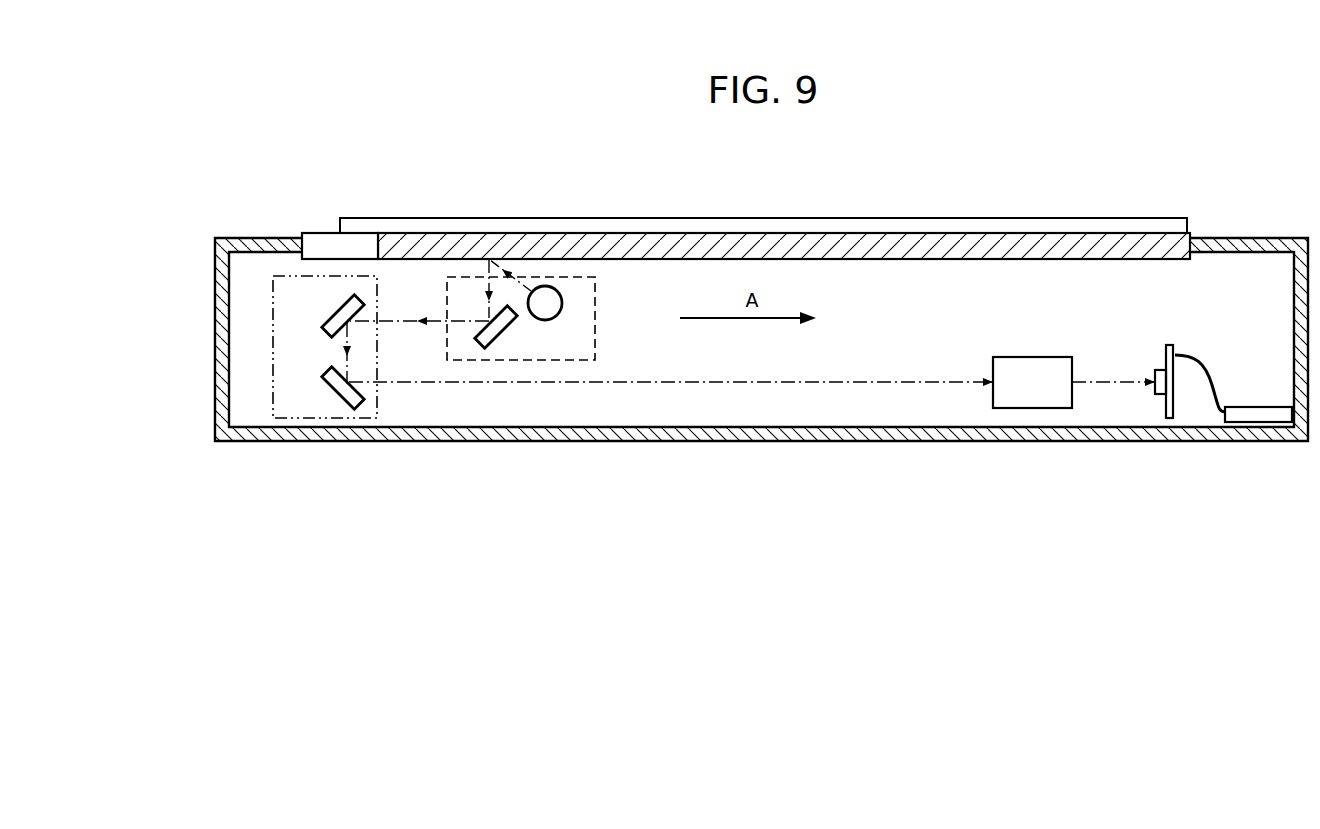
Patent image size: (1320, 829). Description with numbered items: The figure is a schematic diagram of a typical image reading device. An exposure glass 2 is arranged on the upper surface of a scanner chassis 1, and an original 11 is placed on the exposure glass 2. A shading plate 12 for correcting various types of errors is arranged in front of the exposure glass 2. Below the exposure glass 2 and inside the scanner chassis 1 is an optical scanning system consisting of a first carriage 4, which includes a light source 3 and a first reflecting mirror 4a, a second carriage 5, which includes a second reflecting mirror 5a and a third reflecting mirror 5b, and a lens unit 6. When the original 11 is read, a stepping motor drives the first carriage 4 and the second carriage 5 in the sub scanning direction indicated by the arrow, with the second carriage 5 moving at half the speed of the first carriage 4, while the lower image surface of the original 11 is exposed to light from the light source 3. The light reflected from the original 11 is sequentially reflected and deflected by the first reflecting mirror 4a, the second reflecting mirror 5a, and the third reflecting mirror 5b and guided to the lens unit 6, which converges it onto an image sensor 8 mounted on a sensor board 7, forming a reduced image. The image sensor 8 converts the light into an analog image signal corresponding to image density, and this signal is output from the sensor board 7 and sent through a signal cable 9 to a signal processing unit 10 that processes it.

The scanner chassis 1 is at (1056, 441).
The exposure glass 2 is at (648, 233).
The light source 3 is at (562, 301).
The first carriage 4 is at (544, 318).
The first reflecting mirror 4a is at (504, 327).
The second carriage 5 is at (349, 347).
The second reflecting mirror 5a is at (335, 307).
The third reflecting mirror 5b is at (336, 392).
The lens unit 6 is at (1034, 357).
The sensor board 7 is at (1172, 410).
The image sensor 8 is at (1154, 372).
The signal cable 9 is at (1178, 355).
The signal processing unit 10 is at (1256, 407).
The original 11 is at (1028, 218).
The shading plate 12 is at (320, 233).